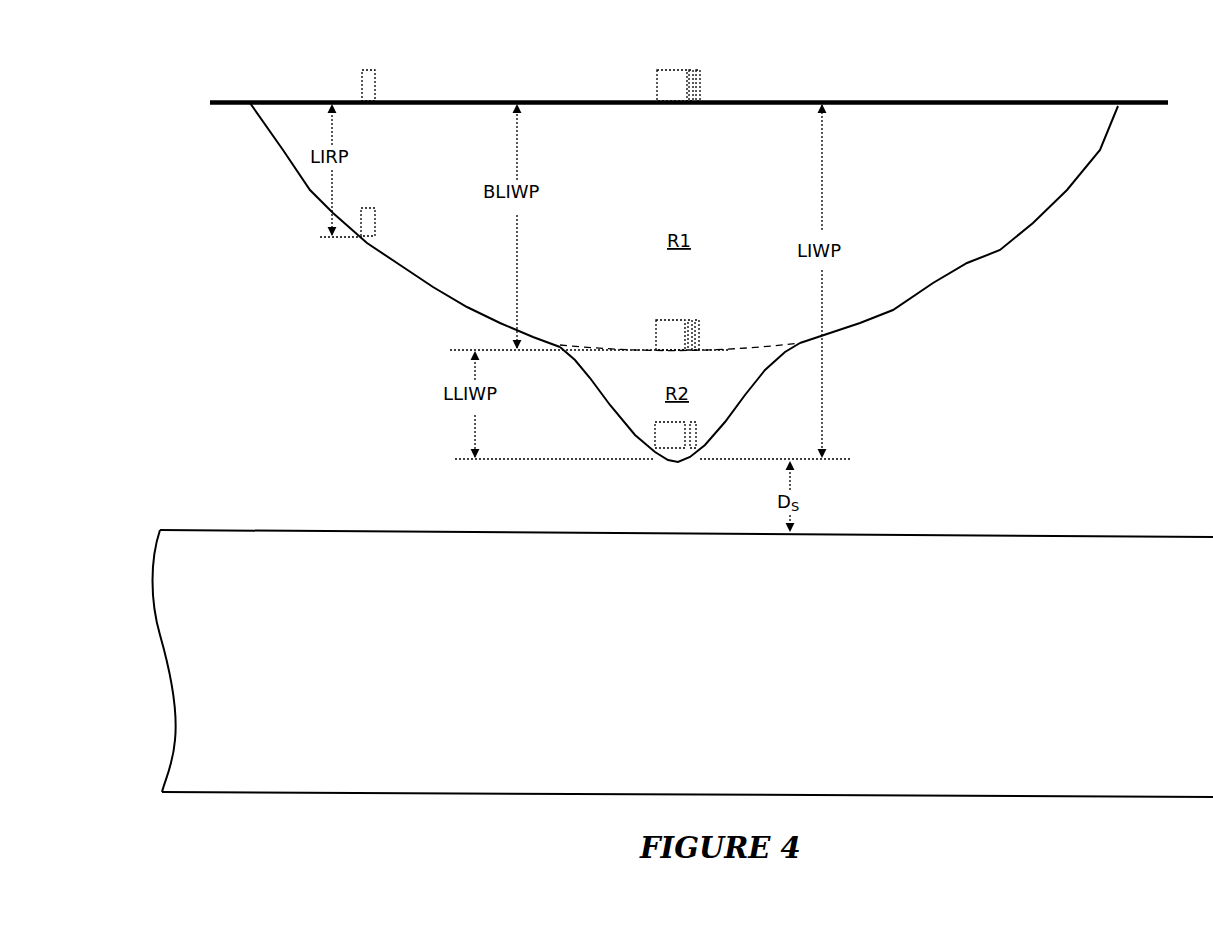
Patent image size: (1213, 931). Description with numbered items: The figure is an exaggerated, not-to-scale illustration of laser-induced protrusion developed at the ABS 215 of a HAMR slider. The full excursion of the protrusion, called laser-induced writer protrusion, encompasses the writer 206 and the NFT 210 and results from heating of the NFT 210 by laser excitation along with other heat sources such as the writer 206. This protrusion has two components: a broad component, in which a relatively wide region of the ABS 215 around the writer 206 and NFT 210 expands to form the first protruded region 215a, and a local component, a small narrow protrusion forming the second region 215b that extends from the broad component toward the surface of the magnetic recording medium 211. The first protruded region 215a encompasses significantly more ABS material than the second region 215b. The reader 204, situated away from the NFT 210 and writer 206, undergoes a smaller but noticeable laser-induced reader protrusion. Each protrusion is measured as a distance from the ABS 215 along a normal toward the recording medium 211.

The reader 204 is at (378, 76).
The writer 206 is at (656, 82).
The NFT 210 is at (704, 82).
The magnetic recording medium 211 is at (1116, 535).
The ABS 215 is at (1145, 107).
The protruded region R1 215a is at (1003, 252).
The region R2 215b is at (751, 390).